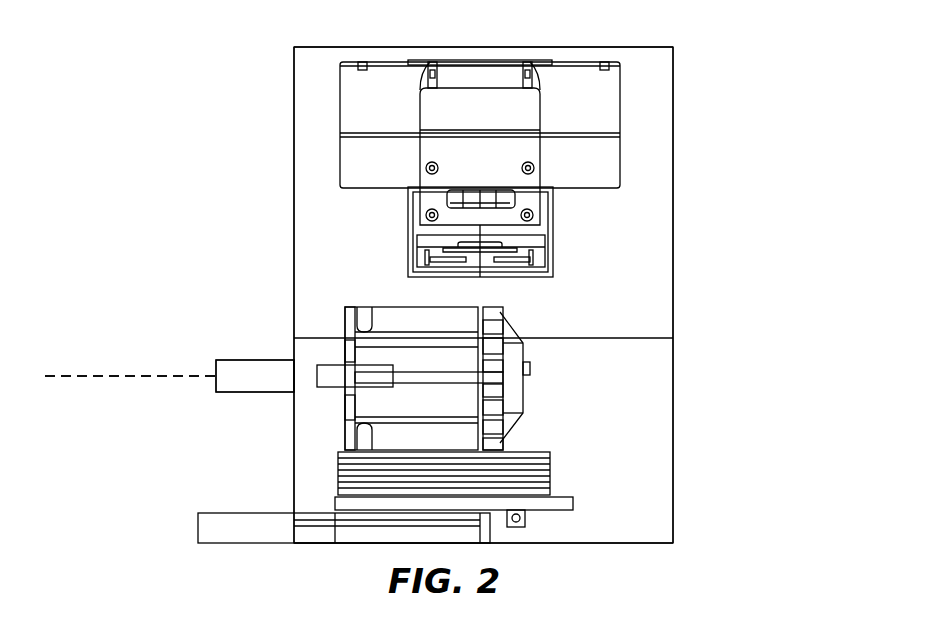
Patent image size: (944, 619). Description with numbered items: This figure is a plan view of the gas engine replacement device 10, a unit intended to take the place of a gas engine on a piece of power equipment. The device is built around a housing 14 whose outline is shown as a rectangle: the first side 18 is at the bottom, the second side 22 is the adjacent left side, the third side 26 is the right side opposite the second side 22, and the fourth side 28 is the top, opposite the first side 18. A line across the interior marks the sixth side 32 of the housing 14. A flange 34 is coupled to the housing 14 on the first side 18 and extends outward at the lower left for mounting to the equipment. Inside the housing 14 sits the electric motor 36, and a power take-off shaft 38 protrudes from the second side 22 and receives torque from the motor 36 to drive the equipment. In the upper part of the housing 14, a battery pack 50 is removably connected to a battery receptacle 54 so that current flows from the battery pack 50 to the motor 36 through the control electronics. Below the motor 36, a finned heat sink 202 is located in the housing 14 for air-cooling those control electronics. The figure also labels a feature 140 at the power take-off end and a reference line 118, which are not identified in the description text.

The gas engine replacement device 10 is at (681, 25).
The housing 14 is at (628, 372).
The first side 18 is at (572, 543).
The second side 22 is at (294, 167).
The third side 26 is at (673, 210).
The fourth side 28 is at (572, 47).
The sixth side 32 is at (630, 292).
The flange 34 is at (380, 533).
The electric motor 36 is at (368, 413).
The power take-off shaft 38 is at (240, 392).
The battery pack 50 is at (592, 112).
The battery receptacle 54 is at (432, 270).
The axis 118 is at (125, 373).
The drive shaft 140 is at (215, 370).
The heat sink 202 is at (548, 462).